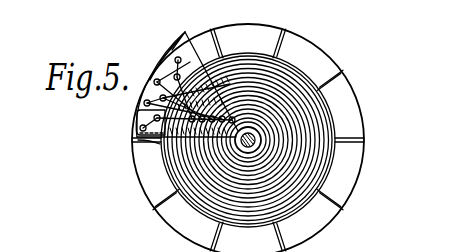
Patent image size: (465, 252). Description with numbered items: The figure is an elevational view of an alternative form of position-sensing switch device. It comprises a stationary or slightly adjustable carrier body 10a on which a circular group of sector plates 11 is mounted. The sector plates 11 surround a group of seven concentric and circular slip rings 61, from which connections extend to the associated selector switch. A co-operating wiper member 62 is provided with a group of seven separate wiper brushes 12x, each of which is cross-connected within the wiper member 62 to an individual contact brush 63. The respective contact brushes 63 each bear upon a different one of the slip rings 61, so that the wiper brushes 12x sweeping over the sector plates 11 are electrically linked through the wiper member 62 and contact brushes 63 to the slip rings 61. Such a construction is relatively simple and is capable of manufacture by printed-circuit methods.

The carrier body 10a is at (318, 44).
The sector plates 11 is at (222, 42).
The wiper brushes 12x is at (240, 32).
The slip rings 61 is at (312, 117).
The wiper member 62 is at (164, 57).
The contact brushes 63 is at (176, 150).